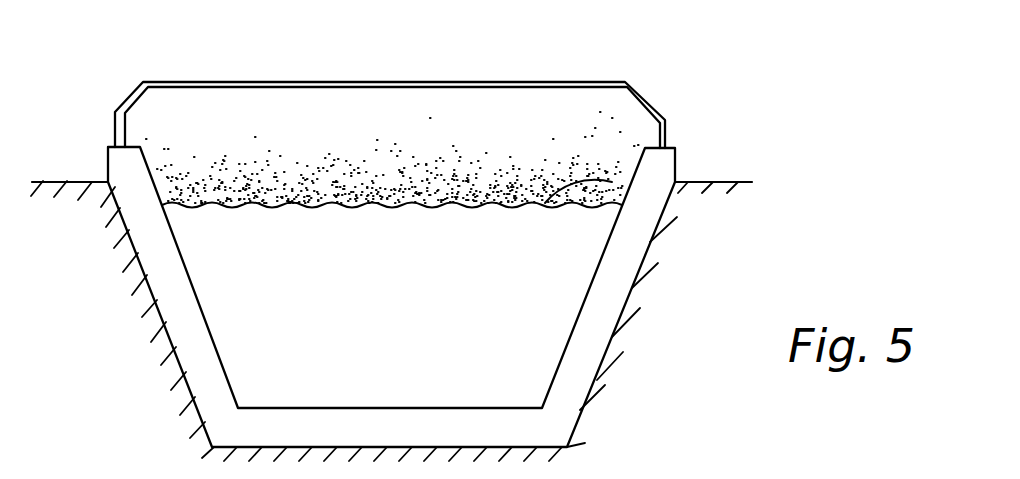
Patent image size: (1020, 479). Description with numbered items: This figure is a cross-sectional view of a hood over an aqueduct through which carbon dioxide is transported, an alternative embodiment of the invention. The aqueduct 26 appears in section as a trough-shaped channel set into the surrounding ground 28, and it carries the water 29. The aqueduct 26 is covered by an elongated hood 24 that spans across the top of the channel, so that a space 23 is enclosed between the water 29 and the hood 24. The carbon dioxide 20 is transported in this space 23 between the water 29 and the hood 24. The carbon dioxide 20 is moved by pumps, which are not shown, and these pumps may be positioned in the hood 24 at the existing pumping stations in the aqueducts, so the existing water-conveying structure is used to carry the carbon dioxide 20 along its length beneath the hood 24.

The carbon dioxide 20 is at (378, 177).
The space 23 is at (407, 120).
The elongated hood 24 is at (612, 85).
The aqueduct 26 is at (600, 300).
The ground 28 is at (76, 182).
The water 29 is at (612, 182).